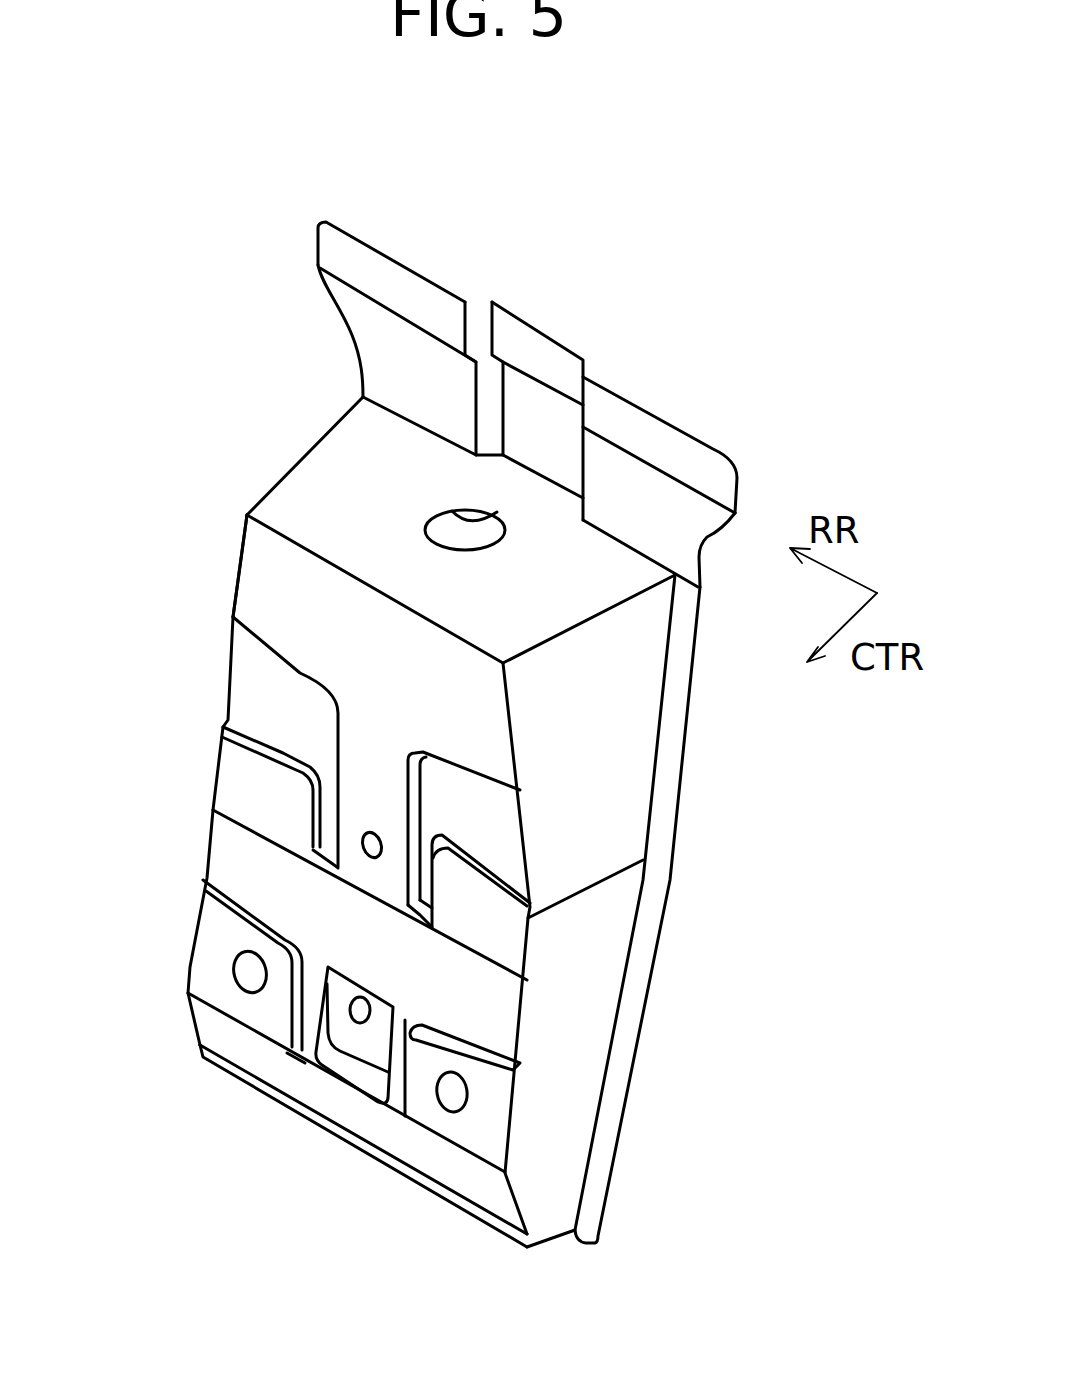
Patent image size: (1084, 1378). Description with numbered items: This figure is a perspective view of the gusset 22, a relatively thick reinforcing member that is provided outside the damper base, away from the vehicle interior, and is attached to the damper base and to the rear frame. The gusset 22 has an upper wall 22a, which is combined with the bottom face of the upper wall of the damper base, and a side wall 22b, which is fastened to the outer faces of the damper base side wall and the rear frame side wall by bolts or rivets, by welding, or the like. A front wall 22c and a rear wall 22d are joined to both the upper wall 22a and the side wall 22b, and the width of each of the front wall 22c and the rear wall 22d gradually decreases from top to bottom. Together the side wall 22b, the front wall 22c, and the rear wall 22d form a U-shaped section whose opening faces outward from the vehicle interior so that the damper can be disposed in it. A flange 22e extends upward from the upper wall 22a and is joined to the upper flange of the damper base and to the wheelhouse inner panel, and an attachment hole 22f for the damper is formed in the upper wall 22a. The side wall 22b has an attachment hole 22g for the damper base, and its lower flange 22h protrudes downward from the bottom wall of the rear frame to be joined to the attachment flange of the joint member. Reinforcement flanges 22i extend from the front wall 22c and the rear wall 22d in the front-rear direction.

The gusset 22 is at (676, 410).
The upper wall 22a is at (413, 478).
The side wall 22b is at (395, 687).
The front wall 22c is at (598, 793).
The rear wall 22d is at (277, 580).
The flange 22e is at (410, 288).
The attachment hole 22f is at (493, 513).
The attachment hole 22g is at (376, 857).
The lower flange 22h is at (463, 1177).
The reinforcement flange 22i is at (670, 730).